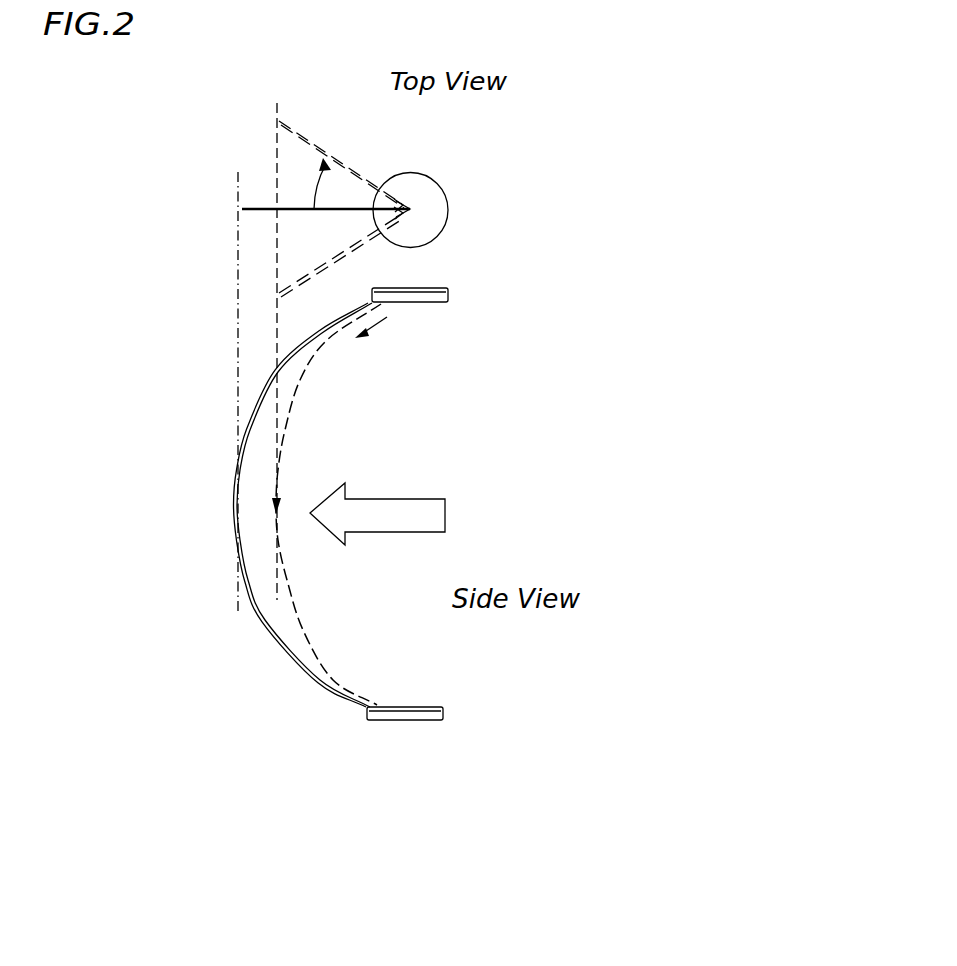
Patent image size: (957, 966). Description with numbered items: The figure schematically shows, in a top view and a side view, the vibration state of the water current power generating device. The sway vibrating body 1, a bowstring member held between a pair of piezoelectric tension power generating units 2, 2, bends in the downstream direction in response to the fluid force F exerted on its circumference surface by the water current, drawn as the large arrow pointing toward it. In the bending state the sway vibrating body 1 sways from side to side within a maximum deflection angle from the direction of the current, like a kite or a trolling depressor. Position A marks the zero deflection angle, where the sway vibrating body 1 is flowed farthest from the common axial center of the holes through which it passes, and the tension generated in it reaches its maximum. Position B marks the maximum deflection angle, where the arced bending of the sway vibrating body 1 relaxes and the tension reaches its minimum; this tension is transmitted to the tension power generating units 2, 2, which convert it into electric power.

The sway vibrating body 1 is at (272, 620).
The tension power generating unit 2 is at (390, 735).
The position of zero deflection angle A is at (311, 208).
The position of maximum deflection angle B is at (331, 210).
The fluid force F is at (388, 498).